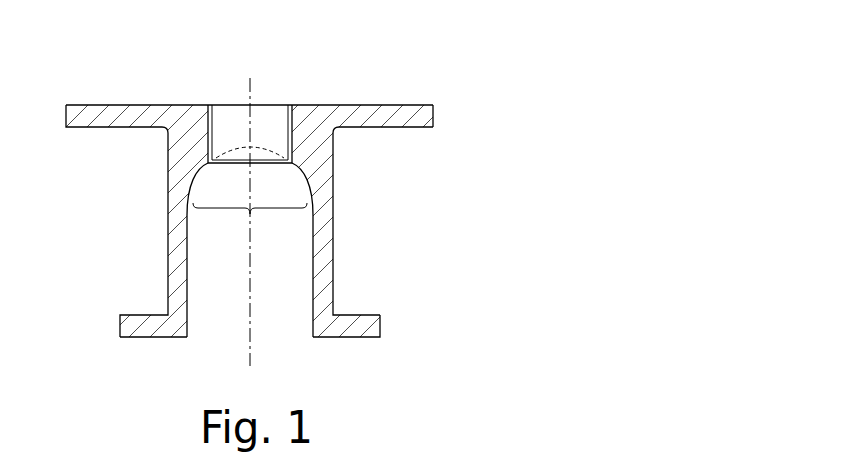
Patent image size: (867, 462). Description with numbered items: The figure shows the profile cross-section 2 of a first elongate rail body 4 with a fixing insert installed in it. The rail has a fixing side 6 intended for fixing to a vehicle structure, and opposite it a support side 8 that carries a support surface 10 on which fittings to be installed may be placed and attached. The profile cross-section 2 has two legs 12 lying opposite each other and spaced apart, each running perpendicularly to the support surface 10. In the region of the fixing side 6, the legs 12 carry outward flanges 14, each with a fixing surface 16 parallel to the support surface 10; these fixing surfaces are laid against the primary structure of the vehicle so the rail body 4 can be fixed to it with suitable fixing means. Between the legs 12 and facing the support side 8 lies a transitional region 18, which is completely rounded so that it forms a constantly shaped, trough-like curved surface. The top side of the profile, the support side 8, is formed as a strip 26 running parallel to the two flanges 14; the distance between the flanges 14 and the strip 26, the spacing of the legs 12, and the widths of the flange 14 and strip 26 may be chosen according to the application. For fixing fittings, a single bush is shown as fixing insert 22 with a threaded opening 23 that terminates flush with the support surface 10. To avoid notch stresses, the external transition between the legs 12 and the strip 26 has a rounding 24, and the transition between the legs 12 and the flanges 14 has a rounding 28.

The profile cross-section 2 is at (348, 113).
The first elongate rail body 4 is at (310, 74).
The fixing side 6 is at (397, 329).
The support side 8 is at (100, 102).
The support surface 10 is at (176, 104).
The legs 12 is at (189, 273).
The outward flanges 14 is at (152, 322).
The fixing surface 16 is at (142, 338).
The transitional region 18 is at (250, 215).
The fixing insert 22 is at (271, 106).
The threaded opening 23 is at (232, 104).
The rounding 24 is at (162, 131).
The strip 26 is at (437, 113).
The rounding 28 is at (336, 312).